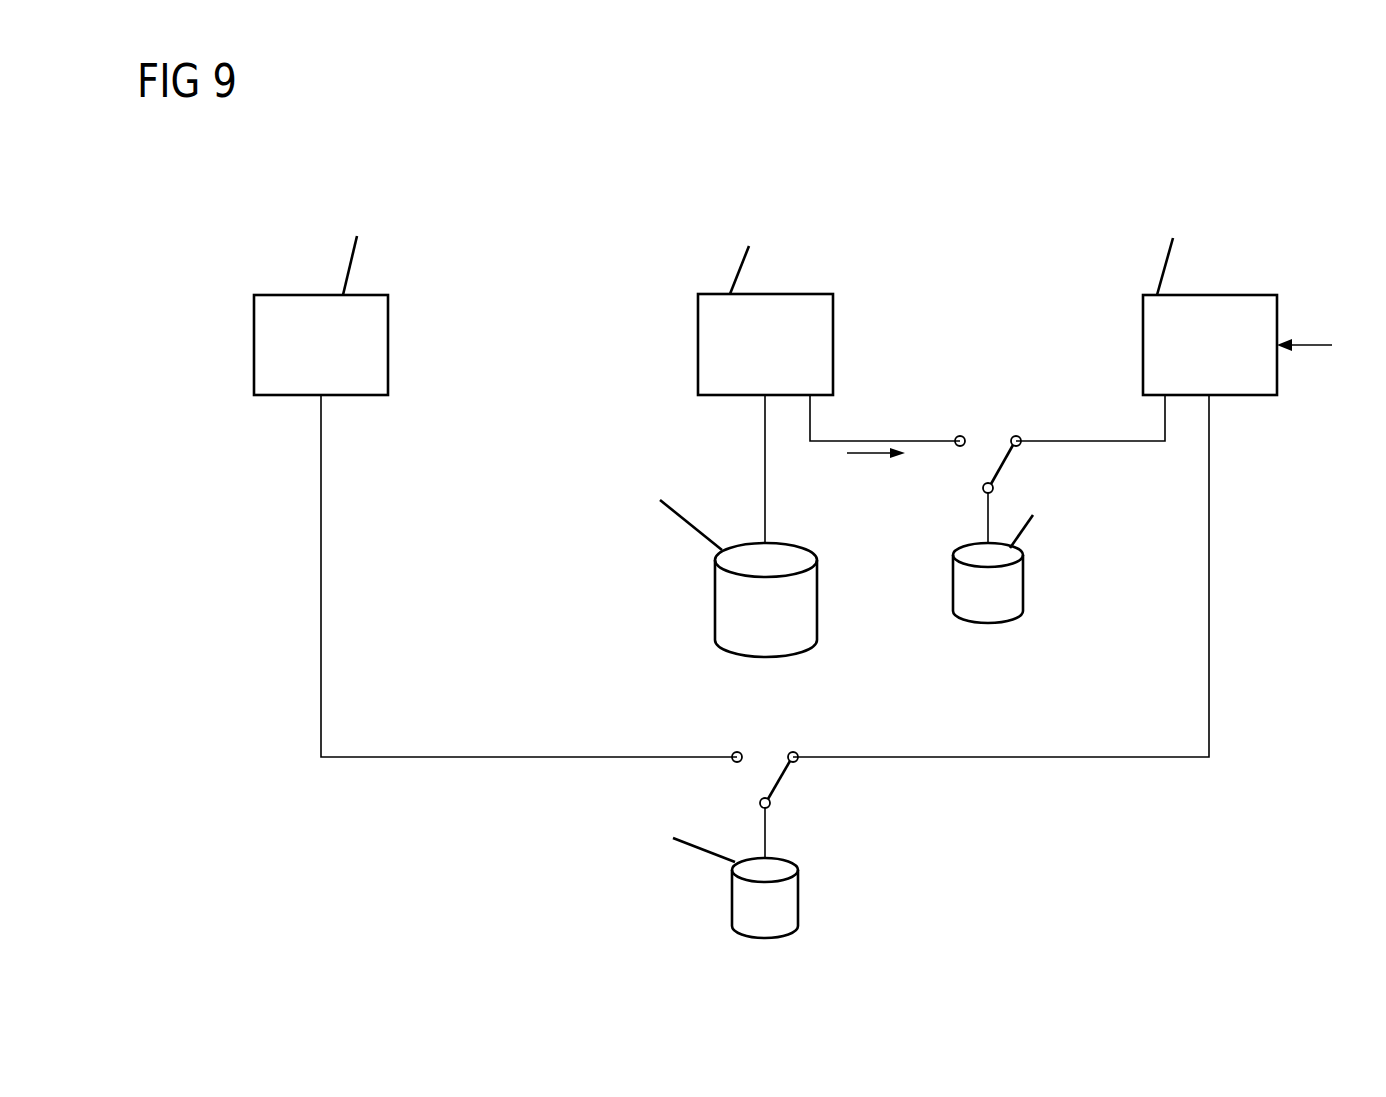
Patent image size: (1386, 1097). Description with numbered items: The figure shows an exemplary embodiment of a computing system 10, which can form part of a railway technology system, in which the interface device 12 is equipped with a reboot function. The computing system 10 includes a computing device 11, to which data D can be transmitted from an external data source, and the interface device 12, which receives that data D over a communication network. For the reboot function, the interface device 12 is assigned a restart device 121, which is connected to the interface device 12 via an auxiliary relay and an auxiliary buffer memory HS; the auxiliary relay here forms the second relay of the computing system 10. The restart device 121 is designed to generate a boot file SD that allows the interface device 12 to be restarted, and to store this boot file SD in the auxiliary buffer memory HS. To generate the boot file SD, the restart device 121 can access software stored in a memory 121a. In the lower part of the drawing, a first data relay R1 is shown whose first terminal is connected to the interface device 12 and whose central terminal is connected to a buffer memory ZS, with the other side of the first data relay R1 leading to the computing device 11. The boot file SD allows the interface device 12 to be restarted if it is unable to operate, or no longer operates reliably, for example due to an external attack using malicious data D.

The computing system 10 is at (280, 789).
The computing device 11 is at (305, 360).
The interface device 12 is at (1194, 360).
The restart device 121 is at (743, 359).
The memory 121a is at (737, 629).
The auxiliary buffer memory HS is at (971, 606).
The buffer memory ZS is at (749, 919).
The data D is at (1304, 330).
The boot file SD is at (876, 471).
The first data relay R1 is at (768, 750).